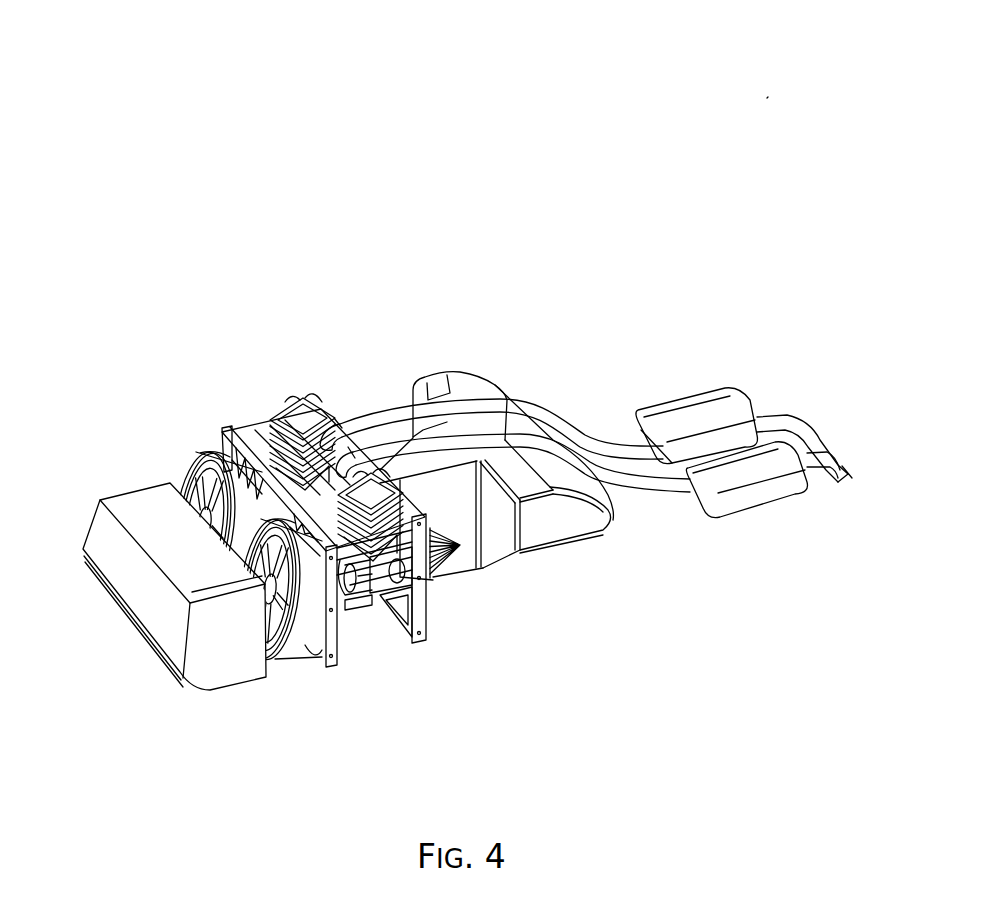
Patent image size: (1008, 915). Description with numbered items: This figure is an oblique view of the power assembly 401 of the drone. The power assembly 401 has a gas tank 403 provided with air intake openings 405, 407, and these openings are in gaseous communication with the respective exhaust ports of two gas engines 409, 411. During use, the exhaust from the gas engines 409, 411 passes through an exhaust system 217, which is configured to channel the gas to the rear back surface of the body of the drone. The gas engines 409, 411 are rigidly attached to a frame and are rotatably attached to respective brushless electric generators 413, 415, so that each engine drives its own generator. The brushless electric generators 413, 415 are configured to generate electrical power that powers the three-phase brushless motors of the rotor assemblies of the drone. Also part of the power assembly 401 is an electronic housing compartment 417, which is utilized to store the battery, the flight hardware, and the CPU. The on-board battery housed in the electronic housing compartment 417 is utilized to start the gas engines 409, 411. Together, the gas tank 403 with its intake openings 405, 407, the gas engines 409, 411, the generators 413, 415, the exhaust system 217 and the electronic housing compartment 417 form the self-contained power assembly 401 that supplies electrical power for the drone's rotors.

The power assembly 401 is at (767, 98).
The gas tank 403 is at (477, 373).
The air intake opening 405 is at (362, 397).
The air intake opening 407 is at (485, 588).
The gas engine 409 is at (287, 400).
The gas engine 411 is at (367, 590).
The brushless electric generator 413 is at (197, 453).
The brushless electric generator 415 is at (297, 656).
The electronic housing compartment 417 is at (132, 628).
The exhaust system 217 is at (805, 395).